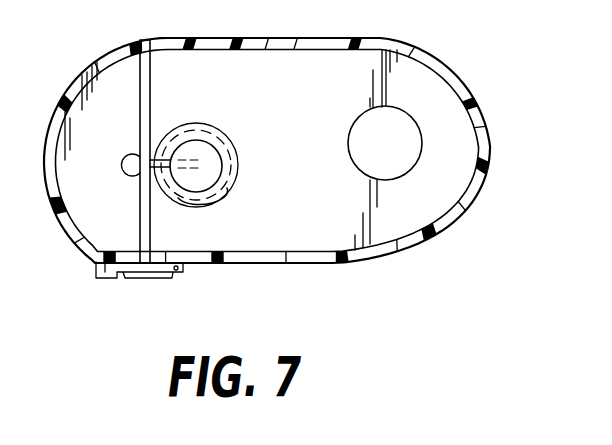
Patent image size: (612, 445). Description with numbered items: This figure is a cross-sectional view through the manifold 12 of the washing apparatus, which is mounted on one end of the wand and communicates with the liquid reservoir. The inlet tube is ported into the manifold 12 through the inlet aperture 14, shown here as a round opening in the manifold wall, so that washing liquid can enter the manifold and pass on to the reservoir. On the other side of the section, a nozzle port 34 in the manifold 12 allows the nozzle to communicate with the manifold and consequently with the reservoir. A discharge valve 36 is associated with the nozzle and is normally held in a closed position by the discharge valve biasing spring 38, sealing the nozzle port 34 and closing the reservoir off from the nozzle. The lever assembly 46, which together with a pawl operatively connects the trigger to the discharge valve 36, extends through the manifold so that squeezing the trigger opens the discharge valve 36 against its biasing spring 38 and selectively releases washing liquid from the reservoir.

The manifold 12 is at (453, 66).
The inlet aperture 14 is at (352, 152).
The nozzle port 34 is at (220, 190).
The discharge valve 36 is at (200, 136).
The discharge valve biasing spring 38 is at (129, 152).
The lever assembly 46 is at (140, 197).